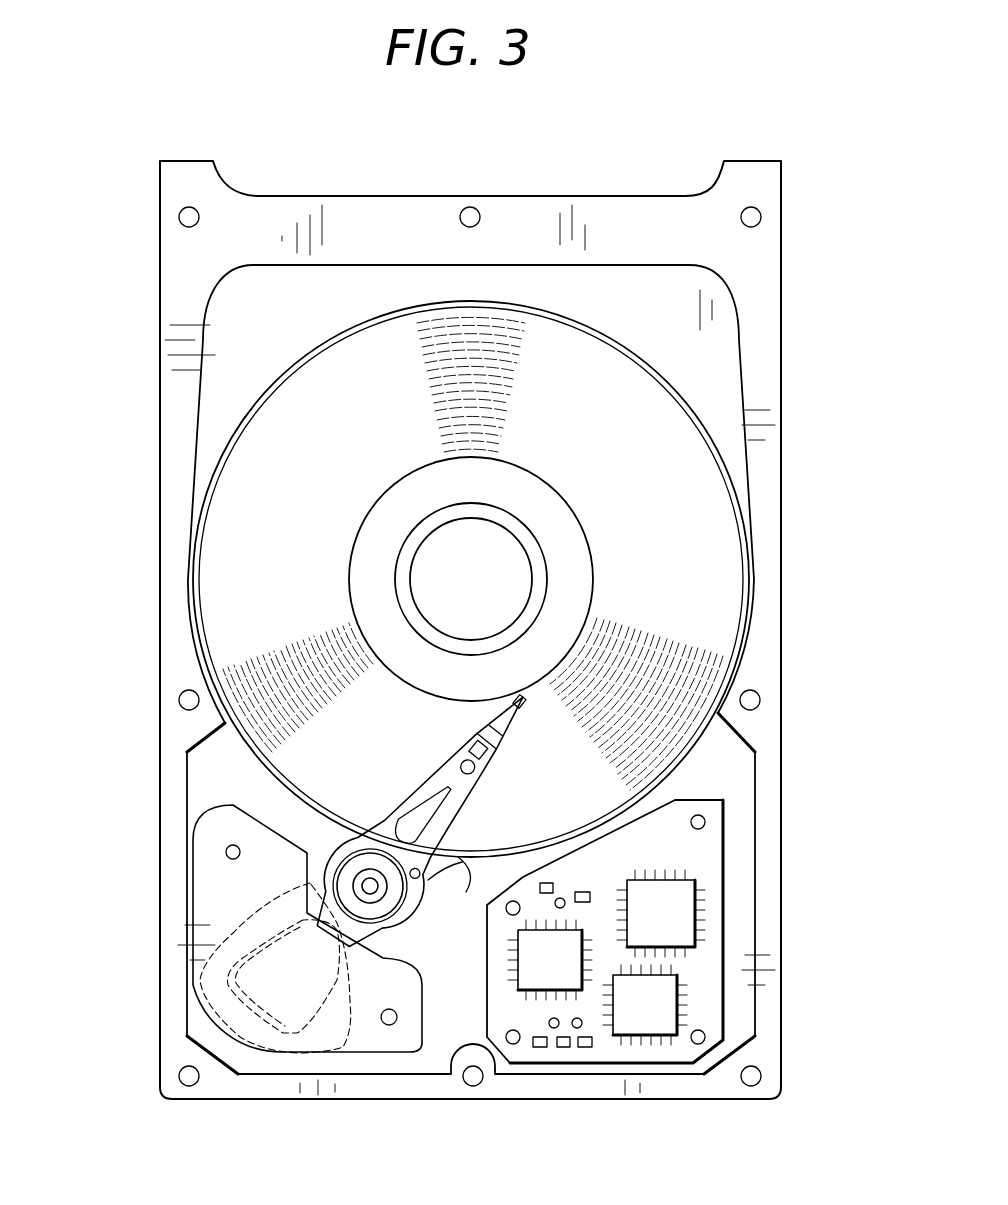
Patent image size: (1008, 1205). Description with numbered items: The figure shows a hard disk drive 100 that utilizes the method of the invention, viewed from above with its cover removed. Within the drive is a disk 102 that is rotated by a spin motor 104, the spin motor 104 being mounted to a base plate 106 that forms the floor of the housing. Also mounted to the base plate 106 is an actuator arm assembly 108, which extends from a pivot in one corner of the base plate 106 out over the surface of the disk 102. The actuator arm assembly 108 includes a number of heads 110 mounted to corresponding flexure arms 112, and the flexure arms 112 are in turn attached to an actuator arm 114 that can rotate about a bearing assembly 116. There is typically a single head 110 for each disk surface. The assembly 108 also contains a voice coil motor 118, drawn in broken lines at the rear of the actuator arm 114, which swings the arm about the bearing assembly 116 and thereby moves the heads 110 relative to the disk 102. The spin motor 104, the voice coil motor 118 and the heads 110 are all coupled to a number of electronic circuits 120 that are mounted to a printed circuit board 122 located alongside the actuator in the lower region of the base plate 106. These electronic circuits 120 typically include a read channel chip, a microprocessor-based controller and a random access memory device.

The hard disk drive 100 is at (762, 114).
The disk 102 is at (645, 450).
The spin motor 104 is at (570, 541).
The base plate 106 is at (232, 310).
The actuator arm assembly 108 is at (445, 810).
The heads 110 is at (530, 695).
The flexure arms 112 is at (483, 728).
The actuator arm 114 is at (423, 792).
The bearing assembly 116 is at (397, 892).
The voice coil motor 118 is at (310, 1003).
The electronic circuits 120 is at (680, 912).
The printed circuit board 122 is at (707, 843).